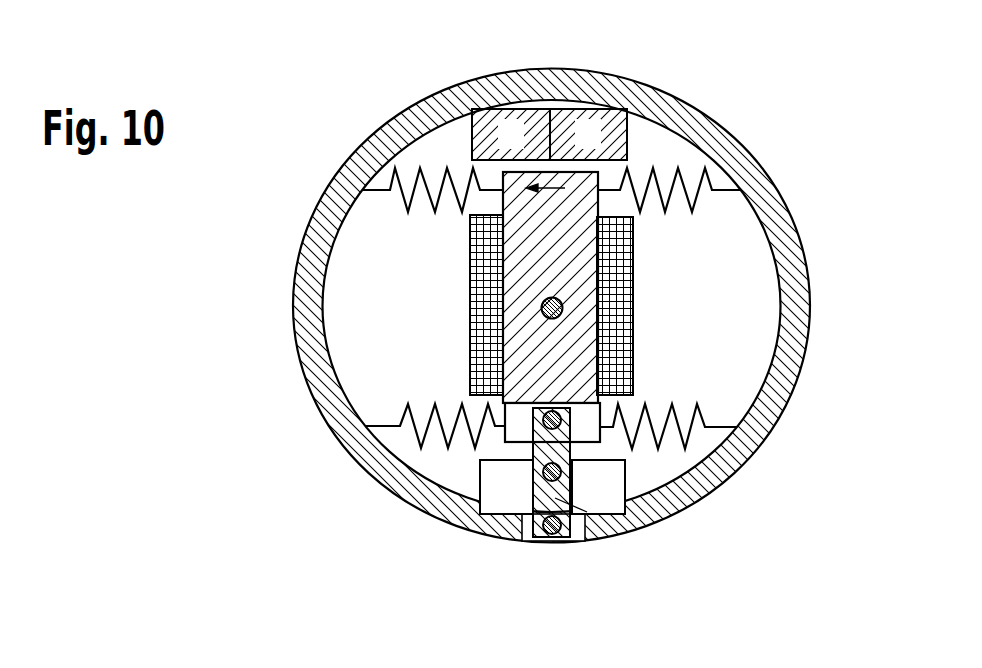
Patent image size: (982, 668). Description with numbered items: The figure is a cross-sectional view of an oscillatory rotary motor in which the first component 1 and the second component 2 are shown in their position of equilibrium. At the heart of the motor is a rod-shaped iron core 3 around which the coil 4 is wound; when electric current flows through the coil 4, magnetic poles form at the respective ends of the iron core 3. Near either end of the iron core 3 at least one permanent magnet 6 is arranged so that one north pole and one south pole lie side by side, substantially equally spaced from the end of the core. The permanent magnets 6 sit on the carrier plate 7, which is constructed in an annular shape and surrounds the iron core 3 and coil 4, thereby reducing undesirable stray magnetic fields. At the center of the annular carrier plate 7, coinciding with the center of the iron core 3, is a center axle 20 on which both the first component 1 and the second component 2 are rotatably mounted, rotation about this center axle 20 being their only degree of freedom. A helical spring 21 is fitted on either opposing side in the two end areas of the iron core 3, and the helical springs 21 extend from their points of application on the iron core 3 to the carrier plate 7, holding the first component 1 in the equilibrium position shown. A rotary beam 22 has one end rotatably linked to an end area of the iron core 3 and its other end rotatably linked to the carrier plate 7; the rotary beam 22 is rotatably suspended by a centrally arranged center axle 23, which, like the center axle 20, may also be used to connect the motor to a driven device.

The first component 1 is at (563, 362).
The second component 2 is at (519, 305).
The iron core 3 is at (540, 350).
The coil 4 is at (635, 268).
The permanent magnet 6 is at (533, 118).
The carrier plate 7 is at (725, 157).
The center axle 20 is at (563, 311).
The helical spring 21 is at (408, 172).
The rotary beam 22 is at (615, 538).
The center axle 23 is at (573, 465).